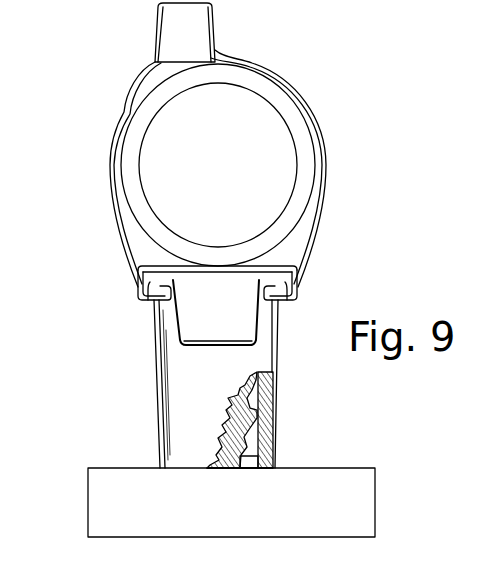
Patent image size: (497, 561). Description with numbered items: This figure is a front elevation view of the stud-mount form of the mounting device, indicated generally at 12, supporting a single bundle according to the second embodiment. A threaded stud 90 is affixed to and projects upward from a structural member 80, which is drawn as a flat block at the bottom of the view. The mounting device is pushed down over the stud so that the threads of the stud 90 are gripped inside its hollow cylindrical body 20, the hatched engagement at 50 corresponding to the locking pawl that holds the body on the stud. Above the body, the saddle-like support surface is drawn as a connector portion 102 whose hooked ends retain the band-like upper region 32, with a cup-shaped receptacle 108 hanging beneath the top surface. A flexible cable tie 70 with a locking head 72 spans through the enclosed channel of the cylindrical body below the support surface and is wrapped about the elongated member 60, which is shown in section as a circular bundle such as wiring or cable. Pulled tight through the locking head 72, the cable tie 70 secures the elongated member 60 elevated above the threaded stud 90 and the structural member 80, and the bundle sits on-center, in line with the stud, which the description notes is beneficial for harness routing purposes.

The wearable device 12 is at (134, 322).
The band 20 is at (156, 384).
The connector 32 is at (156, 265).
The fastener / screw 50 is at (274, 423).
The elongated member 60 is at (303, 134).
The cable tie 70 is at (324, 228).
The locking head 72 is at (178, 43).
The structural member 80 is at (103, 484).
The threaded stud 90 is at (233, 470).
The hook / lip of connector 102 is at (136, 291).
The receptacle / cup 108 is at (200, 329).